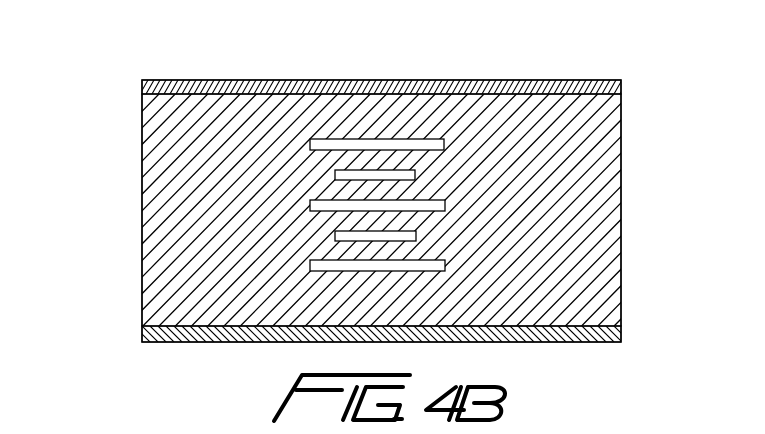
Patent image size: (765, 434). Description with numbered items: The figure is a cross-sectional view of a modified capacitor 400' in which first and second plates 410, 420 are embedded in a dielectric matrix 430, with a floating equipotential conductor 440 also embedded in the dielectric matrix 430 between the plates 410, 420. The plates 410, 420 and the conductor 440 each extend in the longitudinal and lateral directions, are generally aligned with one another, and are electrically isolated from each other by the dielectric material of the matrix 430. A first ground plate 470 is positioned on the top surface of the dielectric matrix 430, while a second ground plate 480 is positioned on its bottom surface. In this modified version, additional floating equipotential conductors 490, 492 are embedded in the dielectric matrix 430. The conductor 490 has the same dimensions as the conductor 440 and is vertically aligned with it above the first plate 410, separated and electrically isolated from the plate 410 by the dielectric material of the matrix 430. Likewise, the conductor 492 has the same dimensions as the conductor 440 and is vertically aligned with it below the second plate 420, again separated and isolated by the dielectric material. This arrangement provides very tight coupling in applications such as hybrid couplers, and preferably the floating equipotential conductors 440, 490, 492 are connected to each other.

The capacitor 400' is at (384, 171).
The first plate 410 is at (334, 176).
The second plate 420 is at (335, 235).
The dielectric matrix 430 is at (260, 296).
The floating equipotential conductor 440 is at (446, 204).
The first ground plate 470 is at (205, 80).
The second ground plate 480 is at (208, 342).
The floating equipotential conductor 490 is at (446, 145).
The floating equipotential conductor 492 is at (447, 266).